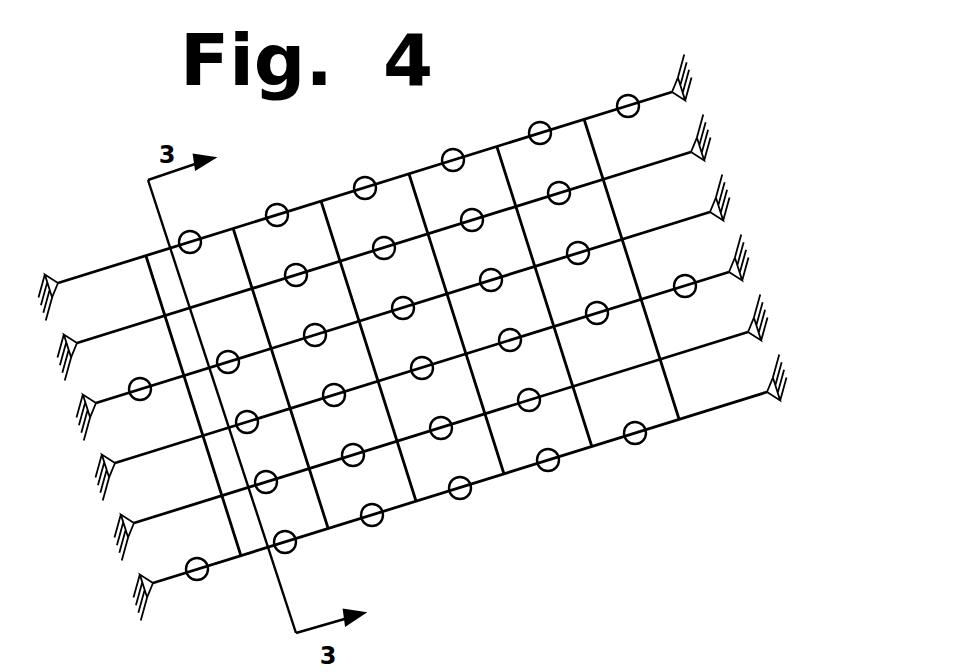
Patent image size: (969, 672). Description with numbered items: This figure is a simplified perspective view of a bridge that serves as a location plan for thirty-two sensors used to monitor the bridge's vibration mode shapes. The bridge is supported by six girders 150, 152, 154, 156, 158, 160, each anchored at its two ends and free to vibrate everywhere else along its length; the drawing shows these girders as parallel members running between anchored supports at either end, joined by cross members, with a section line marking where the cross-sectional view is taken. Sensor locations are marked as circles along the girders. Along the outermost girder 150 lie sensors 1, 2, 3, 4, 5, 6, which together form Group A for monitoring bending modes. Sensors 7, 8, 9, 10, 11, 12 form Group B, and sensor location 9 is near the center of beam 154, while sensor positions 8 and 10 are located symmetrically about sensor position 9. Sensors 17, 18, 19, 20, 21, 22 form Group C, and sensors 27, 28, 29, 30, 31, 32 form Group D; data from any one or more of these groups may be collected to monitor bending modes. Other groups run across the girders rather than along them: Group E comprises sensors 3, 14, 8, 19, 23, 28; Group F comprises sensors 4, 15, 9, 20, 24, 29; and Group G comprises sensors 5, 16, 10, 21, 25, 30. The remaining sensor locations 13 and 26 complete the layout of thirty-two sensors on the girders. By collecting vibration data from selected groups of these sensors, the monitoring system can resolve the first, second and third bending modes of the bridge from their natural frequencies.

The girder 150 is at (650, 94).
The girder 152 is at (669, 154).
The beam 154 is at (688, 214).
The girder 156 is at (707, 274).
The girder 158 is at (726, 334).
The girder 160 is at (745, 394).
The sensor 1 is at (623, 95).
The sensor 2 is at (535, 122).
The sensor 3 is at (448, 149).
The sensor 4 is at (360, 177).
The sensor 5 is at (272, 204).
The sensor 6 is at (185, 231).
The sensor 7 is at (573, 242).
The sensor 8 is at (486, 269).
The sensor 9 is at (398, 297).
The sensor 10 is at (309, 324).
The sensor 11 is at (222, 351).
The sensor 12 is at (134, 378).
The sensor 13 is at (553, 182).
The sensor 14 is at (466, 209).
The sensor 15 is at (378, 237).
The sensor 16 is at (290, 264).
The sensor 17 is at (679, 275).
The sensor 18 is at (591, 302).
The sensor 19 is at (504, 329).
The sensor 20 is at (416, 357).
The sensor 21 is at (328, 384).
The sensor 22 is at (241, 411).
The sensor 23 is at (523, 389).
The sensor 24 is at (435, 417).
The sensor 25 is at (347, 444).
The sensor 26 is at (260, 471).
The sensor 27 is at (629, 422).
The sensor 28 is at (542, 449).
The sensor 29 is at (454, 477).
The sensor 30 is at (366, 504).
The sensor 31 is at (279, 531).
The sensor 32 is at (191, 558).